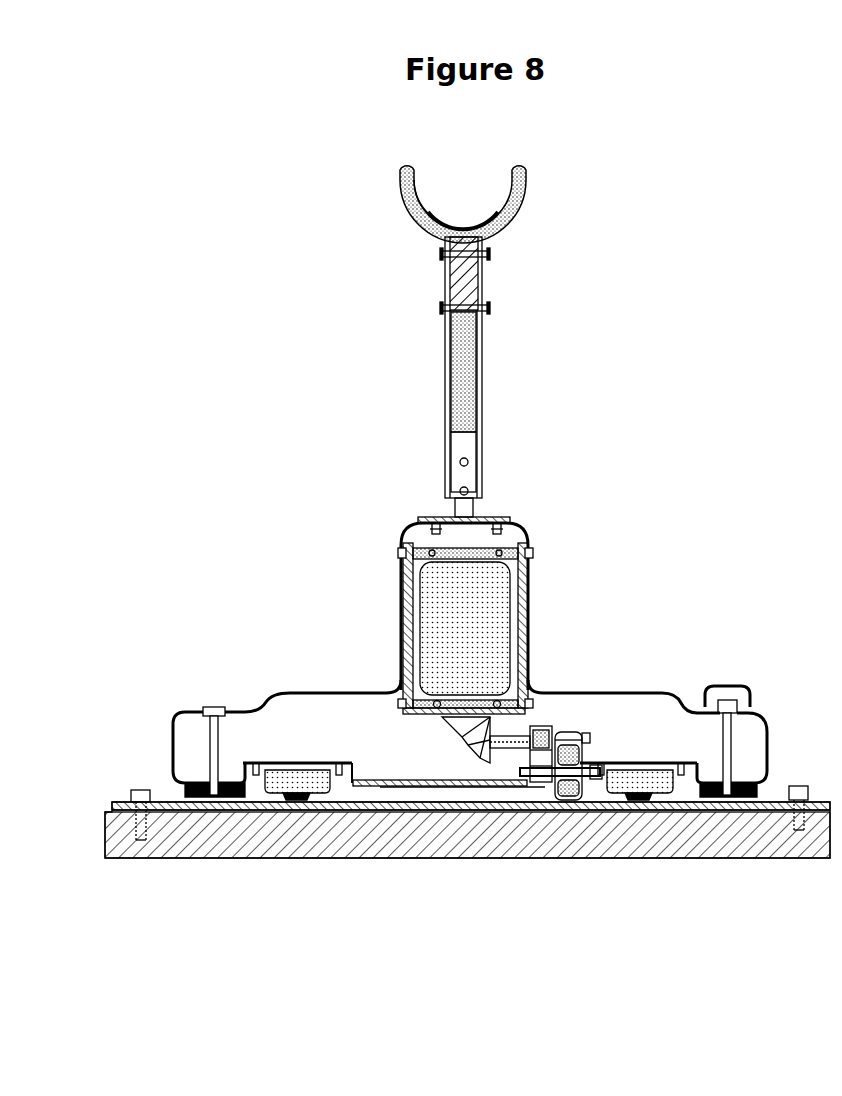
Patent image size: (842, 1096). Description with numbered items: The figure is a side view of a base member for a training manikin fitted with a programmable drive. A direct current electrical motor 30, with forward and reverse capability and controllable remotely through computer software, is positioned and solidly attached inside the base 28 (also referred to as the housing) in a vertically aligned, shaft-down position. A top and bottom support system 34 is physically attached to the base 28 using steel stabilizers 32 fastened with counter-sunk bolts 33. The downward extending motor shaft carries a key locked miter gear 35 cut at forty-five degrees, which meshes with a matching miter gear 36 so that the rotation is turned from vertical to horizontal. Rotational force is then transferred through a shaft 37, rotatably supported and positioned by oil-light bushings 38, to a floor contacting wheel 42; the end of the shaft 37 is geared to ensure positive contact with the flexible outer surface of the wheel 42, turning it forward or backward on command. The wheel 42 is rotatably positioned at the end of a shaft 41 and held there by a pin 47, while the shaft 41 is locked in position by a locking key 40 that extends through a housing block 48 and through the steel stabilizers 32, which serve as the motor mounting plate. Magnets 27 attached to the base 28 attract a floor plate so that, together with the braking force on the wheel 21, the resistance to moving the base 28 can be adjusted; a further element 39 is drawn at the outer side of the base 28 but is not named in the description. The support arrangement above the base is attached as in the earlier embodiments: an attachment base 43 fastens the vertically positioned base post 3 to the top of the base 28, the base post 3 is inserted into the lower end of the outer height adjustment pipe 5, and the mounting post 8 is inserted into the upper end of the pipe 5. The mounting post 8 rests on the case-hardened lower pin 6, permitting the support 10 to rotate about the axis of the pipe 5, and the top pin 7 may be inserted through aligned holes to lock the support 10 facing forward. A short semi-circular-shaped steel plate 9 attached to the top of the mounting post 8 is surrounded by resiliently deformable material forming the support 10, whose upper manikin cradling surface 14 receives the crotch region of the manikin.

The base post 3 is at (462, 475).
The outer height adjustment pipe 5 is at (462, 373).
The lower pin 6 is at (487, 297).
The top pin 7 is at (487, 248).
The mounting post 8 is at (458, 272).
The semi-circular-shaped steel plate 9 is at (427, 223).
The support 10 is at (520, 202).
The manikin cradling surface 14 is at (437, 222).
The wheel 21 is at (265, 822).
The magnets 27 is at (185, 785).
The base 28 is at (363, 710).
The DC electrical motor 30 is at (425, 628).
The steel stabilizers 32 is at (400, 561).
The counter-sunk bolts 33 is at (400, 551).
The top and bottom support system 34 is at (455, 540).
The key locked miter gear 35 is at (487, 733).
The matching miter gear 36 is at (500, 740).
The shaft 37 is at (547, 735).
The oil-light bushings 38 is at (573, 730).
The bolt 39 is at (677, 697).
The locking key 40 is at (512, 786).
The shaft 41 is at (543, 785).
The floor contacting wheel 42 is at (560, 780).
The attachment base 43 is at (488, 518).
The pin 47 is at (582, 780).
The housing block 48 is at (585, 735).